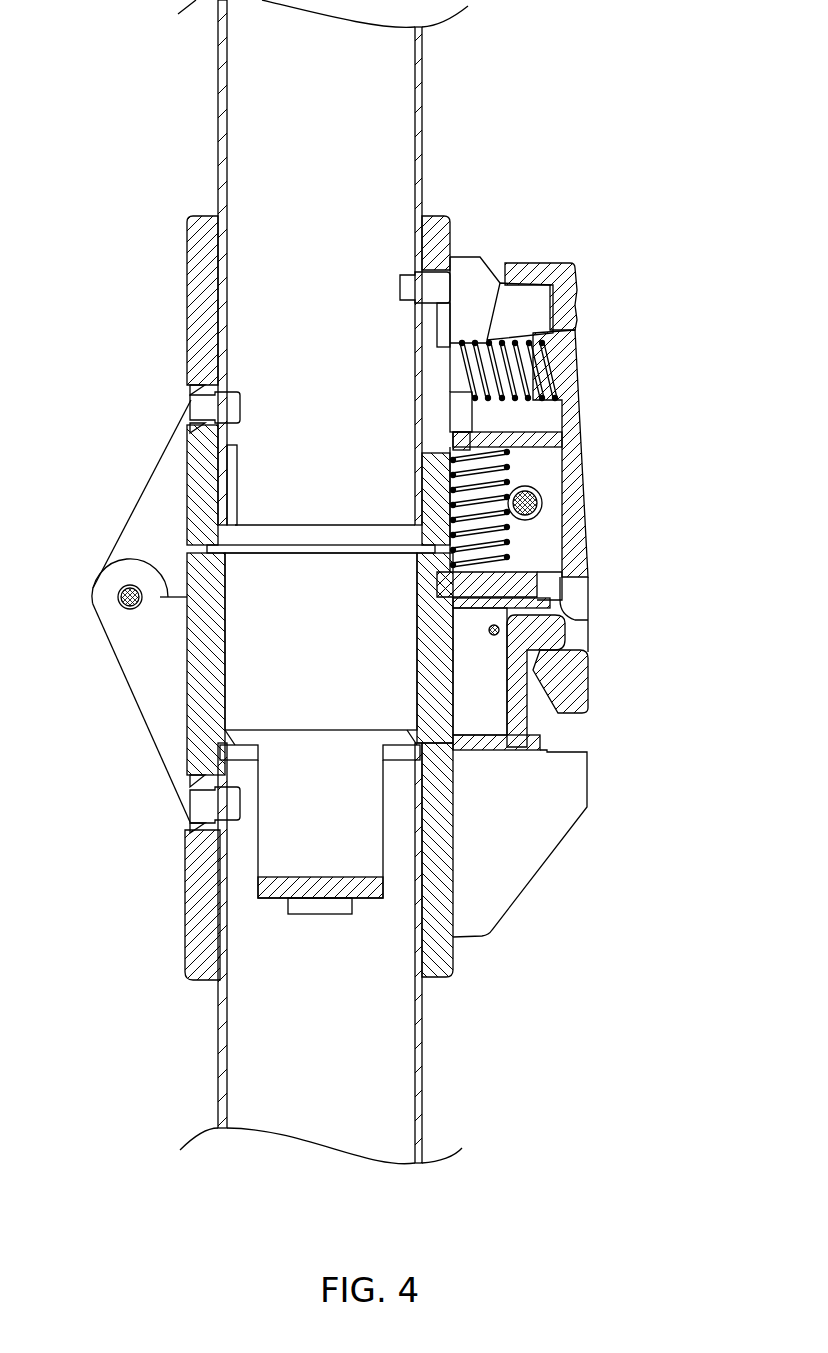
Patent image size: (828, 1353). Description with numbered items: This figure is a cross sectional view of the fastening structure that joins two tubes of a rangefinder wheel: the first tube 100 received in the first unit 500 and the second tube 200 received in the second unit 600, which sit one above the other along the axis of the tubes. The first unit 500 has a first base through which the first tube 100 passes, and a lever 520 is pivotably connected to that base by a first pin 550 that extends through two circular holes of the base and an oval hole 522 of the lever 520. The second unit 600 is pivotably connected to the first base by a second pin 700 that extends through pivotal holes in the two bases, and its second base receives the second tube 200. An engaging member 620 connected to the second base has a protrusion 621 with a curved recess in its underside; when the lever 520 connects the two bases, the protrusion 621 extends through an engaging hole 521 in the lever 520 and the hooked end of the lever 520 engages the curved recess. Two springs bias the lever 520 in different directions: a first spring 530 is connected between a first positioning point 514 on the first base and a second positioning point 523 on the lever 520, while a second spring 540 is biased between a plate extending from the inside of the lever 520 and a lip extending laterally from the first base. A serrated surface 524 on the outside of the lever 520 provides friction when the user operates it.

The first tube 100 is at (405, 112).
The second tube 200 is at (405, 1074).
The first unit 500 is at (198, 284).
The first positioning point 514 is at (453, 360).
The lever 520 is at (587, 398).
The engaging hole 521 is at (583, 585).
The oval hole 522 is at (515, 478).
The second positioning point 523 is at (533, 333).
The serrated surface 524 is at (577, 290).
The first spring 530 is at (507, 372).
The second spring 540 is at (512, 537).
The first pin 550 is at (547, 507).
The second unit 600 is at (200, 897).
The engaging member 620 is at (512, 718).
The protrusion 621 is at (583, 620).
The second pin 700 is at (128, 590).